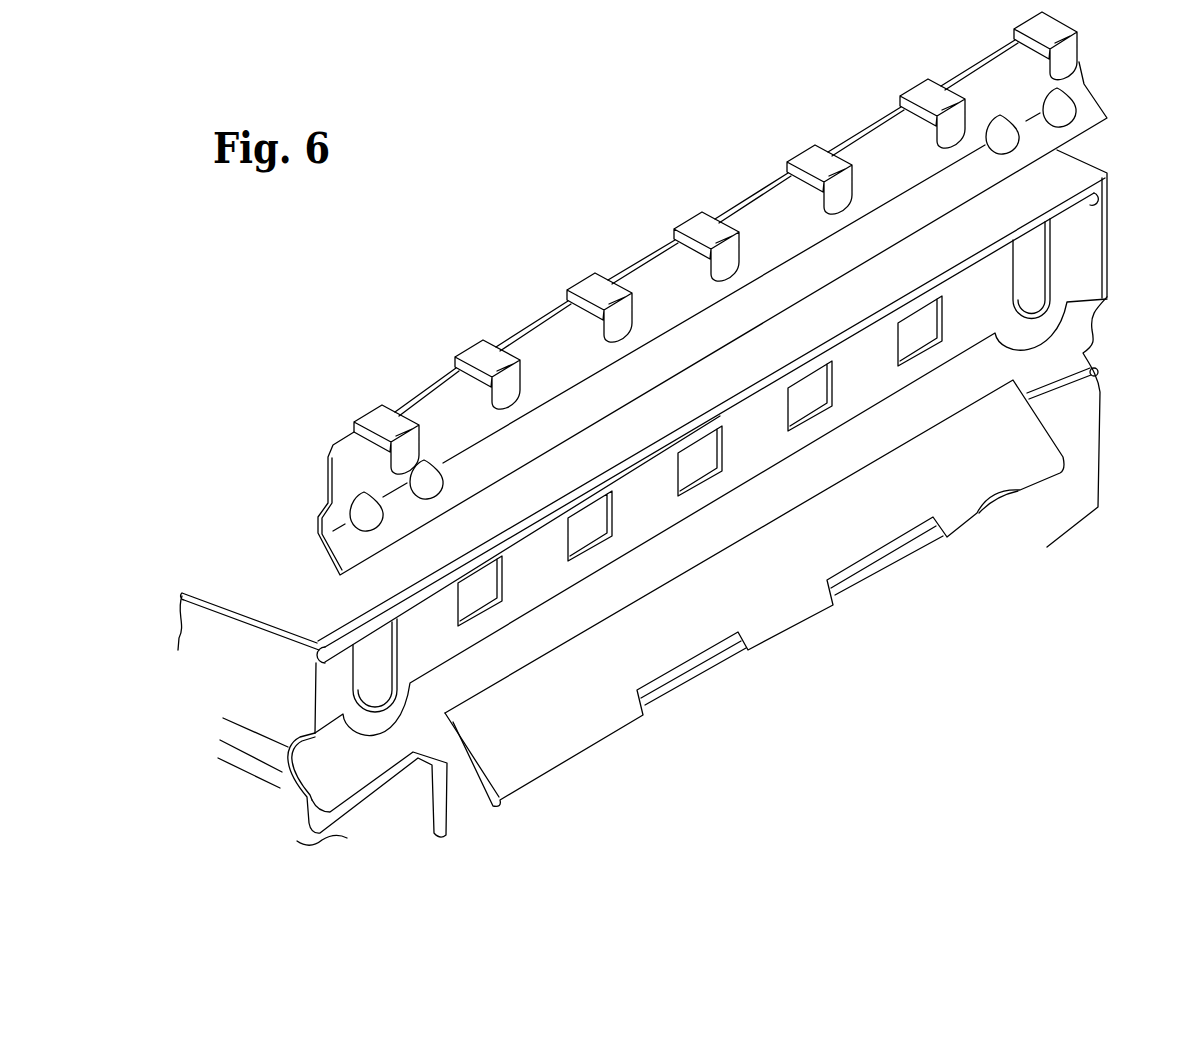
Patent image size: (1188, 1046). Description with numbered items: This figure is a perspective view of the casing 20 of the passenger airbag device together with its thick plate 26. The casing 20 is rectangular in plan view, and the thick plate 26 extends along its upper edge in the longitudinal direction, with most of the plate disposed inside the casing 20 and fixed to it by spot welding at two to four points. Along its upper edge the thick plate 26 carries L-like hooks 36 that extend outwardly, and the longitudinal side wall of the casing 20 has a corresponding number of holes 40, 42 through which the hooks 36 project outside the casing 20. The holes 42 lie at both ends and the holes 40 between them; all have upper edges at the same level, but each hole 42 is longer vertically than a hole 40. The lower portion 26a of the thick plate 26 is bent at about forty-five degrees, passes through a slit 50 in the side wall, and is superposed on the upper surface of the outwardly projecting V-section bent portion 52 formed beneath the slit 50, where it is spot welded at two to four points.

The casing 20 is at (1037, 530).
The thick plate 26 is at (634, 256).
The lower portion of the thick plate 26a is at (657, 368).
The L-like hooks 36 is at (413, 437).
The holes 40 is at (498, 574).
The holes 42 is at (378, 657).
The slit 50 is at (660, 568).
The bent portion 52 is at (778, 605).